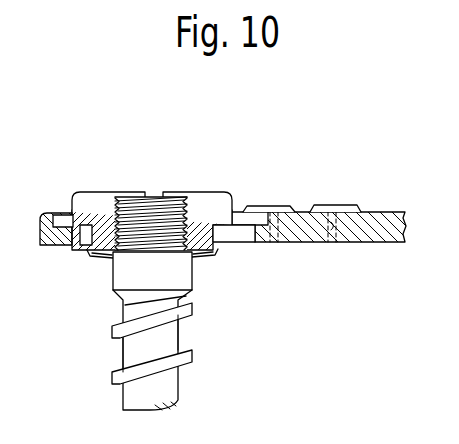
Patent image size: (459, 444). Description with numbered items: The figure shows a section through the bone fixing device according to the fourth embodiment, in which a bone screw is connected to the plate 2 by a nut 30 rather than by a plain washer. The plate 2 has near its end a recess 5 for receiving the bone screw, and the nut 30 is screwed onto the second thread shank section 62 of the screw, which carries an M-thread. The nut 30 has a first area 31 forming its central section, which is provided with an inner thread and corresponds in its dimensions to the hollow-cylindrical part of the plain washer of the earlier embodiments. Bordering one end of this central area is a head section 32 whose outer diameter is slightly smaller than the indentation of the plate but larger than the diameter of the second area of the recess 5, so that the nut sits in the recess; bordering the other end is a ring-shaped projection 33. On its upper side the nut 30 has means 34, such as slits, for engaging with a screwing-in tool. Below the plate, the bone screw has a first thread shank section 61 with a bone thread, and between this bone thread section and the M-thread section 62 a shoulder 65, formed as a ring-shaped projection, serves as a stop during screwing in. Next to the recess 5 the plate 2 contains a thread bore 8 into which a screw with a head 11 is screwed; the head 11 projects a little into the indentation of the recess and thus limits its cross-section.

The plate 2 is at (387, 216).
The recess 5 is at (237, 233).
The thread bore 8 is at (343, 233).
The head 11 is at (315, 204).
The nut 30 is at (226, 185).
The first area 31 is at (72, 234).
The head section 32 is at (84, 212).
The ring-shaped projection 33 is at (76, 246).
The means for engaging with a screwing-in tool 34 is at (200, 196).
The first thread shank section 61 is at (188, 352).
The second thread shank section 62 is at (129, 215).
The shoulder 65 is at (208, 258).